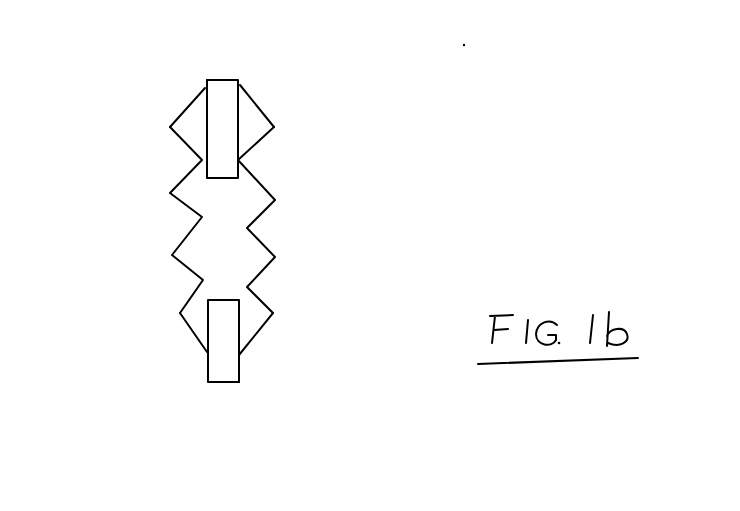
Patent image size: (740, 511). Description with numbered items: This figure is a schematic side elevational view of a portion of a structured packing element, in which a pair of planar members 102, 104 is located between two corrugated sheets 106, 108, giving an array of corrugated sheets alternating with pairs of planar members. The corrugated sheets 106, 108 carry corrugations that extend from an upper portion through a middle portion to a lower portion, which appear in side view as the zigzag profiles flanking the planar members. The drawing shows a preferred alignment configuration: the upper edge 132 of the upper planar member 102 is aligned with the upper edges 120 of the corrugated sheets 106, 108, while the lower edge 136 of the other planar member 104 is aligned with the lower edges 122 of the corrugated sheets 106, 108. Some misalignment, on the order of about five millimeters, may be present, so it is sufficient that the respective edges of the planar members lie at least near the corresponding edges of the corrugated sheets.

The planar member 102 is at (220, 96).
The planar member 104 is at (227, 372).
The corrugated sheet 106 is at (300, 191).
The corrugated sheet 108 is at (138, 206).
The upper edges of the corrugated sheets 120 is at (324, 72).
The lower edges of the corrugated sheets 122 is at (333, 377).
The upper edge of the upper planar member 132 is at (207, 80).
The lower edge of the other planar member 136 is at (238, 383).